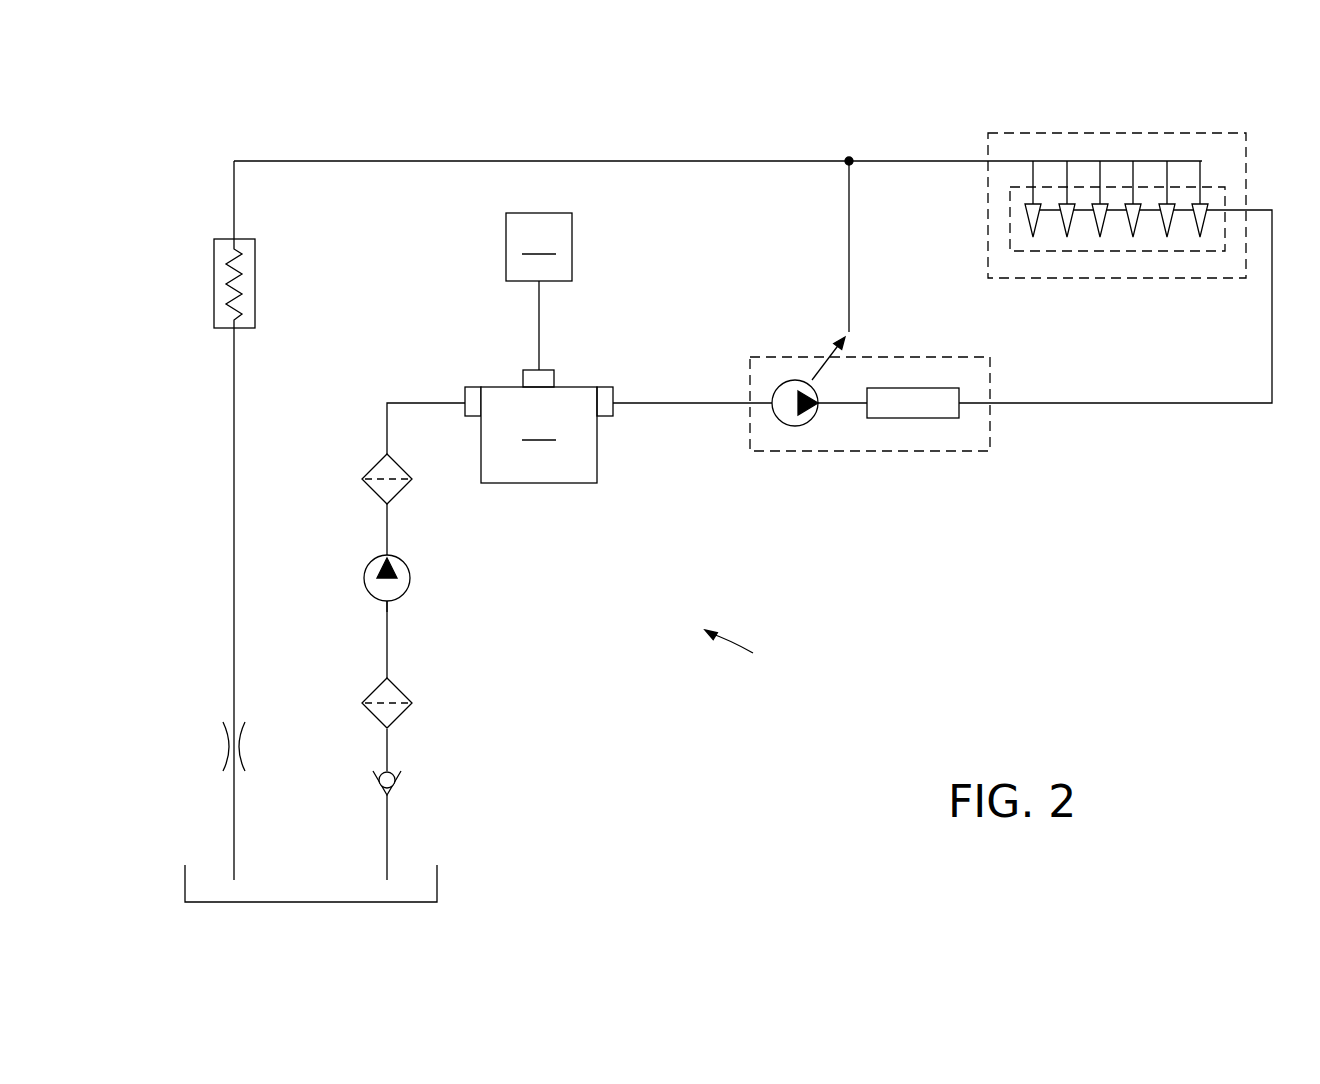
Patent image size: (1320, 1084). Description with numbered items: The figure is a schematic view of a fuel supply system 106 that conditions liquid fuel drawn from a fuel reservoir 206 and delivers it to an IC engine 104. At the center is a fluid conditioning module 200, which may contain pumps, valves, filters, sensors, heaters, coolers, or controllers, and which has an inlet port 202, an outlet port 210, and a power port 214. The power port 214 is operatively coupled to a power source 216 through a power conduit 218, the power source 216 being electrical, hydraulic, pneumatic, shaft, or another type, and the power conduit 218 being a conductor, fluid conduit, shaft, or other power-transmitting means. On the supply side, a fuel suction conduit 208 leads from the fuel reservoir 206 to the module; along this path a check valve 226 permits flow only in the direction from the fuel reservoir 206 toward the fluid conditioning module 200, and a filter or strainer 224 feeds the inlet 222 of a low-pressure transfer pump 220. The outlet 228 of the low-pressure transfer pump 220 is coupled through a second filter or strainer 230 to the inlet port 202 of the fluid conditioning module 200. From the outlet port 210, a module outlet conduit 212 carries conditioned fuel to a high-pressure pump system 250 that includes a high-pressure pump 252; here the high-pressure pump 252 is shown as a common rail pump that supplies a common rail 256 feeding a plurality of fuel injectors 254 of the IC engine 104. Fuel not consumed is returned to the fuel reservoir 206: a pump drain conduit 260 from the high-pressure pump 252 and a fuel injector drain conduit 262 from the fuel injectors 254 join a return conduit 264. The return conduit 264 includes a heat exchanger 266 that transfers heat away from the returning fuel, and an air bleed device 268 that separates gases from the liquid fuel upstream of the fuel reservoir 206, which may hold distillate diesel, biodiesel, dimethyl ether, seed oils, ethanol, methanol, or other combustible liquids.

The IC engine 104 is at (1190, 130).
The fuel supply system 106 is at (756, 647).
The fluid conditioning module 200 is at (539, 435).
The inlet port 202 is at (464, 392).
The fuel reservoir 206 is at (438, 882).
The fuel suction conduit 208 is at (389, 832).
The outlet port 210 is at (610, 420).
The module outlet conduit 212 is at (684, 400).
The power port 214 is at (554, 372).
The power source 216 is at (539, 247).
The power conduit 218 is at (538, 322).
The low-pressure transfer pump 220 is at (411, 582).
The inlet 222 is at (383, 597).
The filter or strainer 224 is at (376, 690).
The check valve 226 is at (398, 786).
The outlet 228 is at (380, 560).
The filter or strainer 230 is at (376, 467).
The high-pressure pump system 250 is at (940, 452).
The high-pressure pump 252 is at (794, 427).
The fuel injectors 254 is at (1178, 252).
The common rail 256 is at (918, 388).
The pump drain conduit 260 is at (848, 214).
The fuel injector drain conduit 262 is at (920, 160).
The return conduit 264 is at (468, 160).
The heat exchanger 266 is at (213, 285).
The air bleed device 268 is at (225, 748).